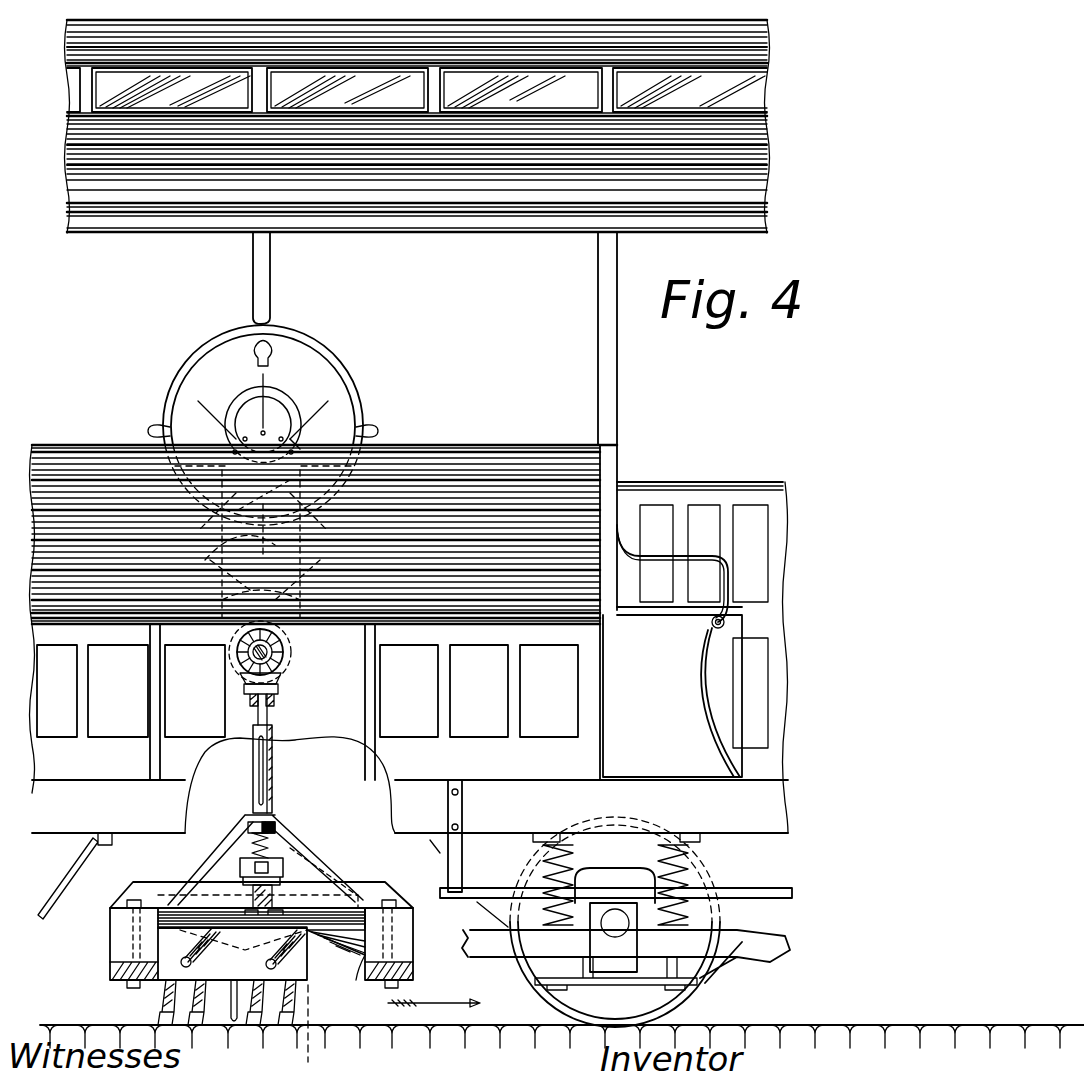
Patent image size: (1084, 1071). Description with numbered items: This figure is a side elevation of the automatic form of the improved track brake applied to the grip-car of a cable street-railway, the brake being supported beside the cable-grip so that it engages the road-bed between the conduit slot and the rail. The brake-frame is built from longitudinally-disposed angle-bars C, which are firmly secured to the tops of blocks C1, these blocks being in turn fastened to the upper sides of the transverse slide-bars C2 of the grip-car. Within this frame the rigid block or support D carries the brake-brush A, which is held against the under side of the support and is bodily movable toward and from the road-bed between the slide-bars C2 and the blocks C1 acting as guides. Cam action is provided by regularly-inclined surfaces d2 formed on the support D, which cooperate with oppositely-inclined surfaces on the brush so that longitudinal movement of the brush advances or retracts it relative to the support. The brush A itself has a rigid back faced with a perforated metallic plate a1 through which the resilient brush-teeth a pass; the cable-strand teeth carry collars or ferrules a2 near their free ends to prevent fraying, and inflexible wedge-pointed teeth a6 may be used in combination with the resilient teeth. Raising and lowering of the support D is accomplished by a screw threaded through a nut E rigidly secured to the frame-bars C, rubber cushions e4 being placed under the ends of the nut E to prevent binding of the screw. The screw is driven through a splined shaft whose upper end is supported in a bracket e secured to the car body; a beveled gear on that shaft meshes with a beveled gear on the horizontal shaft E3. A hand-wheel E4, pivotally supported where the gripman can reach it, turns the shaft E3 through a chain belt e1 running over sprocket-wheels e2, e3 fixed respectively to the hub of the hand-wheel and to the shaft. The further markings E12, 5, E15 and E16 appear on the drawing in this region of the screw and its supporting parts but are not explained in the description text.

The hand-wheel E4 is at (332, 399).
The chain belt e1 is at (259, 428).
The sprocket-wheel e2 is at (297, 436).
The sprocket-wheel e3 is at (240, 636).
The horizontal shaft E3 is at (271, 652).
The bracket e is at (250, 692).
The screw shaft and spring E12 is at (268, 712).
The sleeve 5 is at (345, 762).
The supporting frame E15 is at (282, 822).
The nut E is at (237, 847).
The nut E16 is at (247, 820).
The rubber cushion e4 is at (285, 870).
The angle-bar C is at (137, 888).
The block C1 is at (118, 933).
The transverse slide-bar C2 is at (112, 975).
The brake-brush A is at (300, 969).
The block or support D is at (342, 940).
The inclined surface d2 is at (363, 958).
The metallic plate a1 is at (243, 956).
The brush-tooth a is at (170, 996).
The collar or ferrule a2 is at (236, 1028).
The inflexible tooth a6 is at (243, 1003).